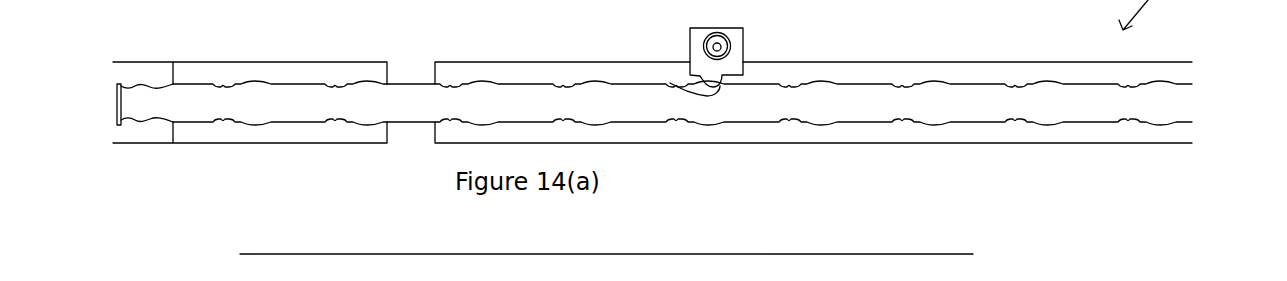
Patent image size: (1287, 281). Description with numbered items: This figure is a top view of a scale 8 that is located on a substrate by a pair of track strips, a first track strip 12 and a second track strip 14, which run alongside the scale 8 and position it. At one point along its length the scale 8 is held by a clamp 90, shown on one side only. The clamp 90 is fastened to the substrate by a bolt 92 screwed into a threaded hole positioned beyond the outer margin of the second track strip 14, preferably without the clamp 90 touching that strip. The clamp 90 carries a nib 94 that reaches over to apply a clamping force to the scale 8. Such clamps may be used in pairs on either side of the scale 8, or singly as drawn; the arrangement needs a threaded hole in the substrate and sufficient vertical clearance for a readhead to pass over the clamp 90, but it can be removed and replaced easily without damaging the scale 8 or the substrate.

The scale 8 is at (1180, 113).
The first track strip 12 is at (1103, 135).
The second track strip 14 is at (958, 70).
The clamp 90 is at (737, 43).
The bolt 92 is at (710, 36).
The nib 94 is at (670, 83).